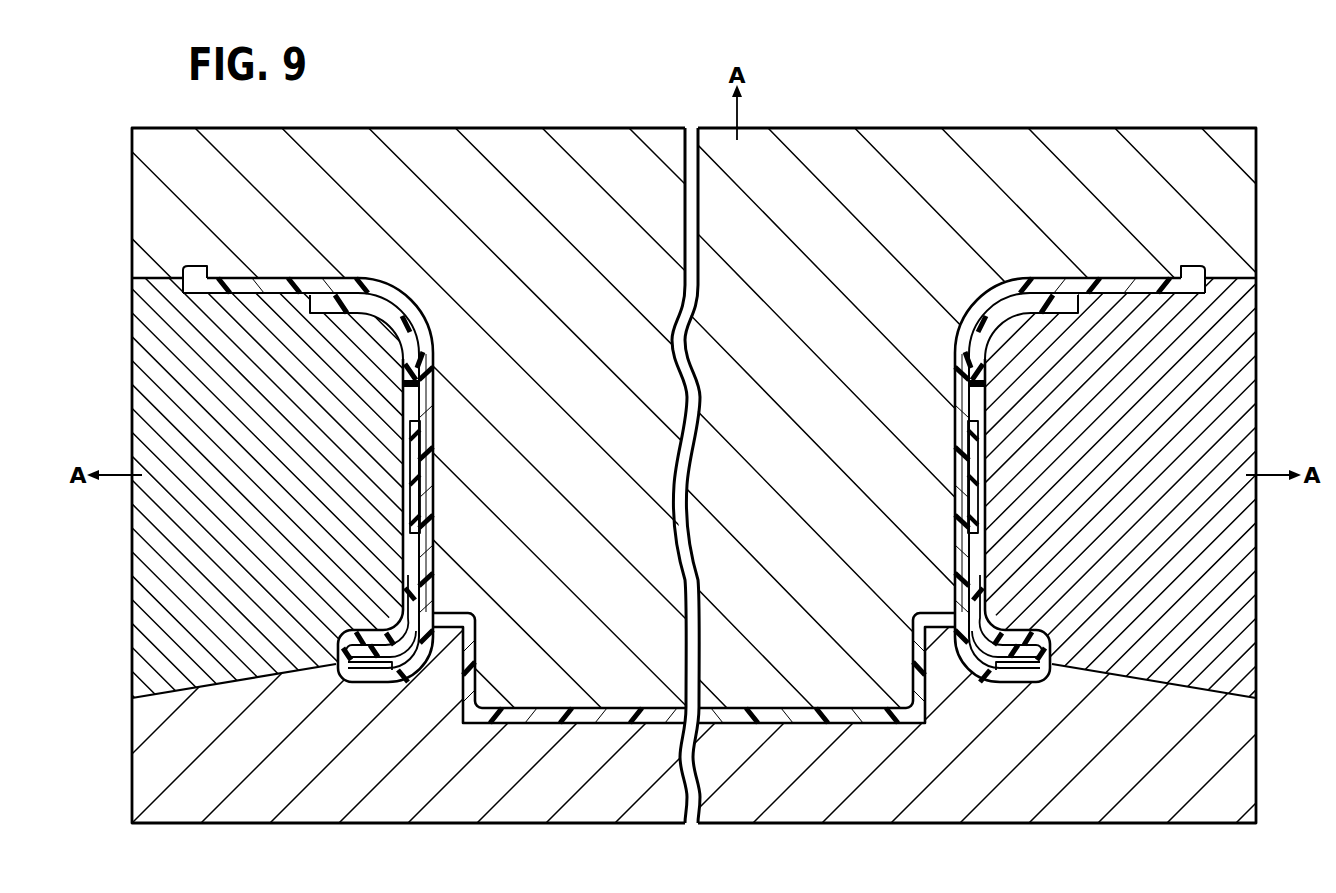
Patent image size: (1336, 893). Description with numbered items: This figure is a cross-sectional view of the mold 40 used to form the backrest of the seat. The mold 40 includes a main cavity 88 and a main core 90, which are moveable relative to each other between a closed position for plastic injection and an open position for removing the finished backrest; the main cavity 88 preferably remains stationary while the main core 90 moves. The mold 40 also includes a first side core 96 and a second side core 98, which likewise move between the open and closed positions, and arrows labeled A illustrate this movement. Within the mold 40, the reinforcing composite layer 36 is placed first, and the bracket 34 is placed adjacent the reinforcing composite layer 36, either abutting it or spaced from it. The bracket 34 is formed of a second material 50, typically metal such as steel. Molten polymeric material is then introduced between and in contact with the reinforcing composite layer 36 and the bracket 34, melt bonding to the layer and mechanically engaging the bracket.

The bracket 34 is at (328, 298).
The reinforcing composite layer 36 is at (411, 296).
The mold 40 is at (883, 98).
The second material 50 is at (417, 467).
The main cavity 88 is at (794, 808).
The main core 90 is at (1073, 150).
The first side core 96 is at (140, 598).
The second side core 98 is at (1248, 600).